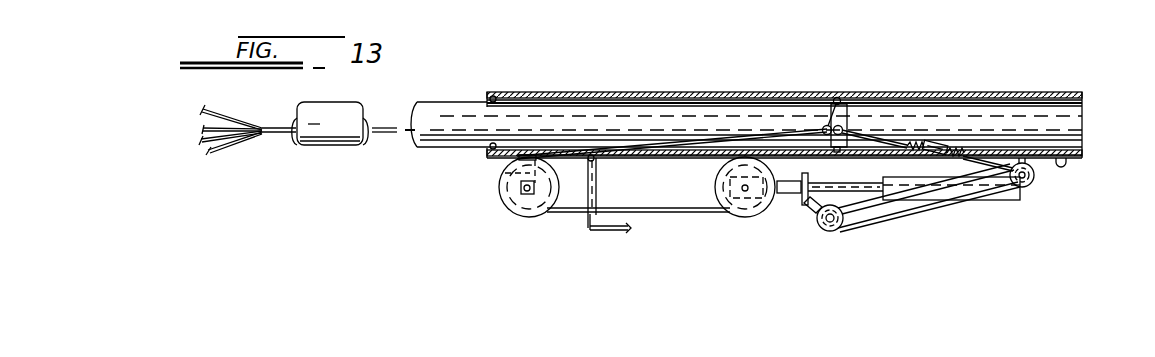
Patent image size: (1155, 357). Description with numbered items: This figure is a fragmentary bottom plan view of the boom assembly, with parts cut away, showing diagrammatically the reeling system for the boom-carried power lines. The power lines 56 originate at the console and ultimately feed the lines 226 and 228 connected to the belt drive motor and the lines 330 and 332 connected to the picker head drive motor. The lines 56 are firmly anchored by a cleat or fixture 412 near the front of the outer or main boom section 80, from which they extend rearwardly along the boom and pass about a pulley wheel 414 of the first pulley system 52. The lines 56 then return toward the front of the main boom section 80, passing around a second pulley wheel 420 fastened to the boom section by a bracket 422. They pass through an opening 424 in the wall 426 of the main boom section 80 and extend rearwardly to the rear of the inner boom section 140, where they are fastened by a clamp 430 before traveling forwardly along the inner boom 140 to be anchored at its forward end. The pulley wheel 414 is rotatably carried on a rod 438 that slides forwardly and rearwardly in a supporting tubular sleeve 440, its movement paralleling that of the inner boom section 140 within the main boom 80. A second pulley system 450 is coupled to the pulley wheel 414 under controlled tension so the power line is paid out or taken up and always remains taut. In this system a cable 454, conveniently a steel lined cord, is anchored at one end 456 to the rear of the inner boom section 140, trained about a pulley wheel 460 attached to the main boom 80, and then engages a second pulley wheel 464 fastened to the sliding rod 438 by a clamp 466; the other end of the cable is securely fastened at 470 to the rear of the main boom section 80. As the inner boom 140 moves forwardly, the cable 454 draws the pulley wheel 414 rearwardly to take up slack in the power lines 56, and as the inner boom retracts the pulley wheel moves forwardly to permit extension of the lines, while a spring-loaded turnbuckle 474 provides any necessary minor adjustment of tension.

The line 330 is at (216, 121).
The line 332 is at (203, 131).
The line 226 is at (202, 142).
The line 228 is at (210, 151).
The power lines 56 is at (387, 137).
The inner boom section 140 is at (439, 100).
The main boom section 80 is at (769, 90).
The opening 424 is at (653, 153).
The clamp 430 is at (837, 97).
The end 456 is at (850, 112).
The spring-loaded turnbuckle 474 is at (937, 146).
The wall 426 is at (828, 152).
The second pulley wheel 420 is at (506, 190).
The bracket 422 is at (517, 174).
The cleat 412 is at (584, 163).
The first pulley system 52 is at (669, 208).
The pulley wheel 414 is at (752, 206).
The clamp 466 is at (805, 204).
The second pulley wheel 464 is at (827, 231).
The rod 438 is at (858, 184).
The tubular sleeve 440 is at (1000, 201).
The second pulley system 450 is at (924, 210).
The cable 454 is at (903, 217).
The pulley wheel 460 is at (1028, 187).
The end fastening point 470 is at (1062, 167).